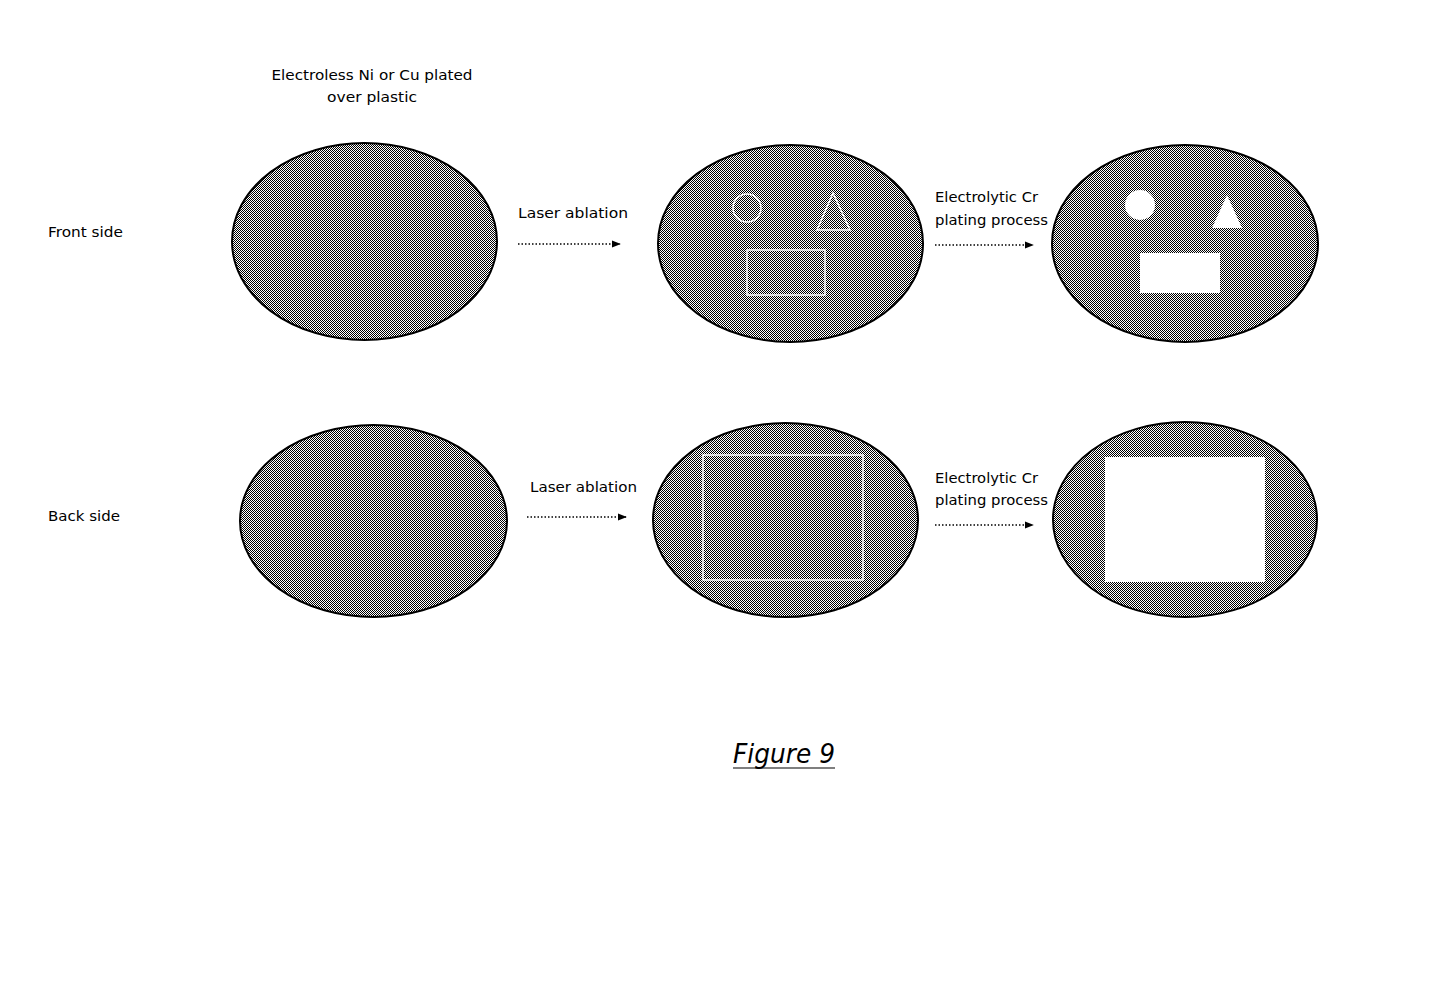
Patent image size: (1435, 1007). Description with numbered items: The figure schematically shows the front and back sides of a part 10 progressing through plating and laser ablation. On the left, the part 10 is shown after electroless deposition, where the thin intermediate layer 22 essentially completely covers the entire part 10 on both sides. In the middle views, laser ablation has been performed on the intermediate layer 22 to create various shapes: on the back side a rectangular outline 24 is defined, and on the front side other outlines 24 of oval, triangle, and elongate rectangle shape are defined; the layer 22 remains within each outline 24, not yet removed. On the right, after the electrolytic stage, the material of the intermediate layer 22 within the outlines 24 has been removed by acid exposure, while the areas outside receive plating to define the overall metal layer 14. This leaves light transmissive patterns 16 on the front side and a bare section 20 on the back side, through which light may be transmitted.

The part 10 is at (800, 128).
The intermediate layer 22 is at (292, 210).
The outline 24 is at (826, 283).
The metal layer 14 is at (1268, 285).
The pattern 16 is at (1200, 282).
The bare section 20 is at (1150, 568).